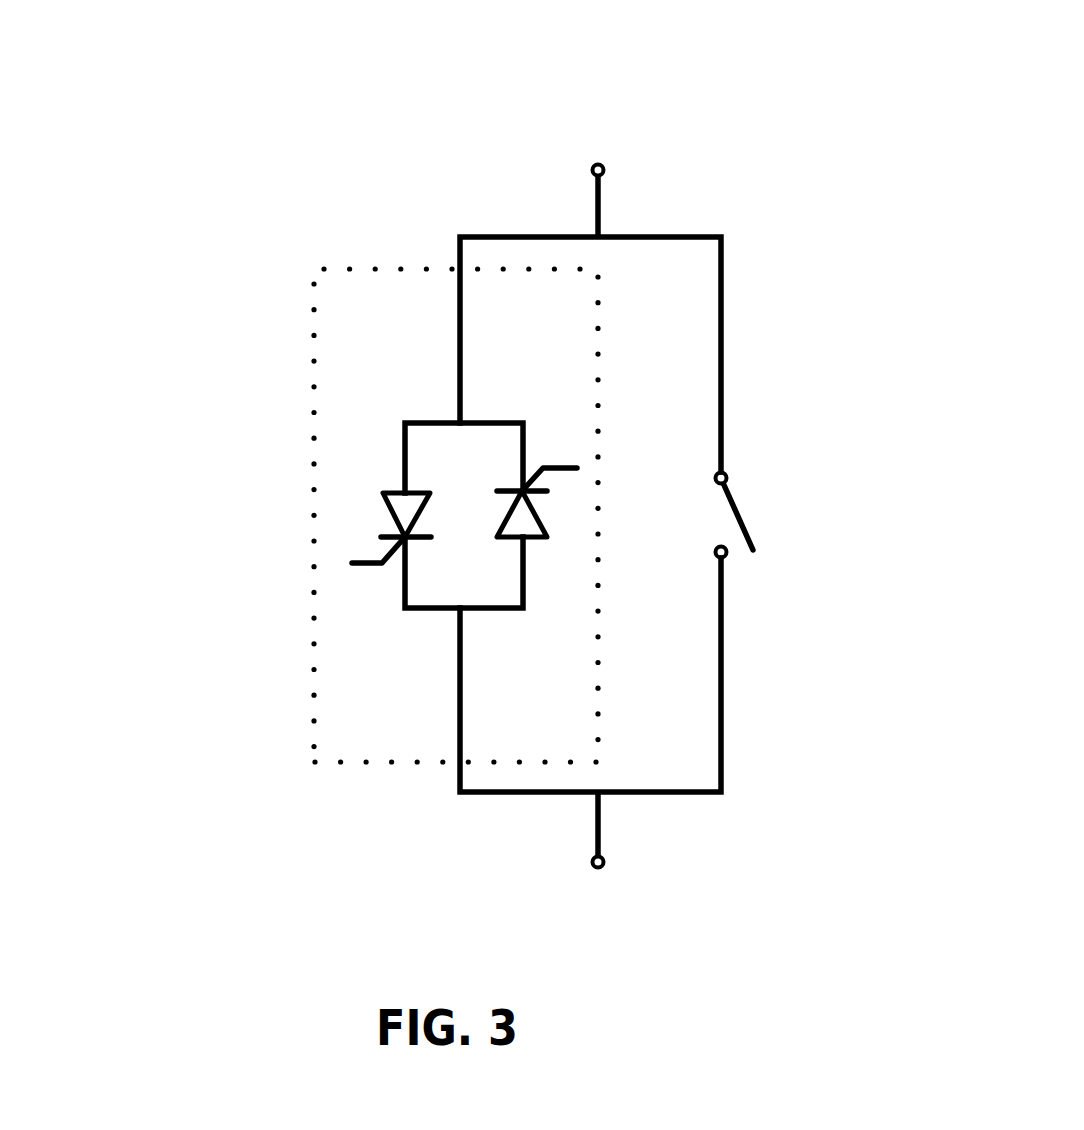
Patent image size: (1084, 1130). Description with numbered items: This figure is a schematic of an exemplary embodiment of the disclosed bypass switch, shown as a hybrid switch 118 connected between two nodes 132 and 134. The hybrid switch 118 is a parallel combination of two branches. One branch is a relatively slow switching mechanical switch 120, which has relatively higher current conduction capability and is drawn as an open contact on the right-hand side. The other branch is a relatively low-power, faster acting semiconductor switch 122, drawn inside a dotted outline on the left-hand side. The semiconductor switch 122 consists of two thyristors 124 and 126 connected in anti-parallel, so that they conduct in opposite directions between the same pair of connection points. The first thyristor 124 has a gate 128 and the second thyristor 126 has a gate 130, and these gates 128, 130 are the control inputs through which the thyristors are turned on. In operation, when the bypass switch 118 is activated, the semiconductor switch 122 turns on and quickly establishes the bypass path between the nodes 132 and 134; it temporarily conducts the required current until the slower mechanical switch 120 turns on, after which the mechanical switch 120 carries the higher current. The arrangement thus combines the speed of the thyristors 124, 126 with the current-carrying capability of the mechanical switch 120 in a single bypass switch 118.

The hybrid switch 118 is at (802, 141).
The mechanical switch 120 is at (777, 490).
The semiconductor switch 122 is at (316, 323).
The thyristor 124 is at (379, 482).
The thyristor 126 is at (575, 553).
The gate 128 is at (371, 577).
The gate 130 is at (572, 454).
The node 132 is at (594, 154).
The node 134 is at (626, 874).